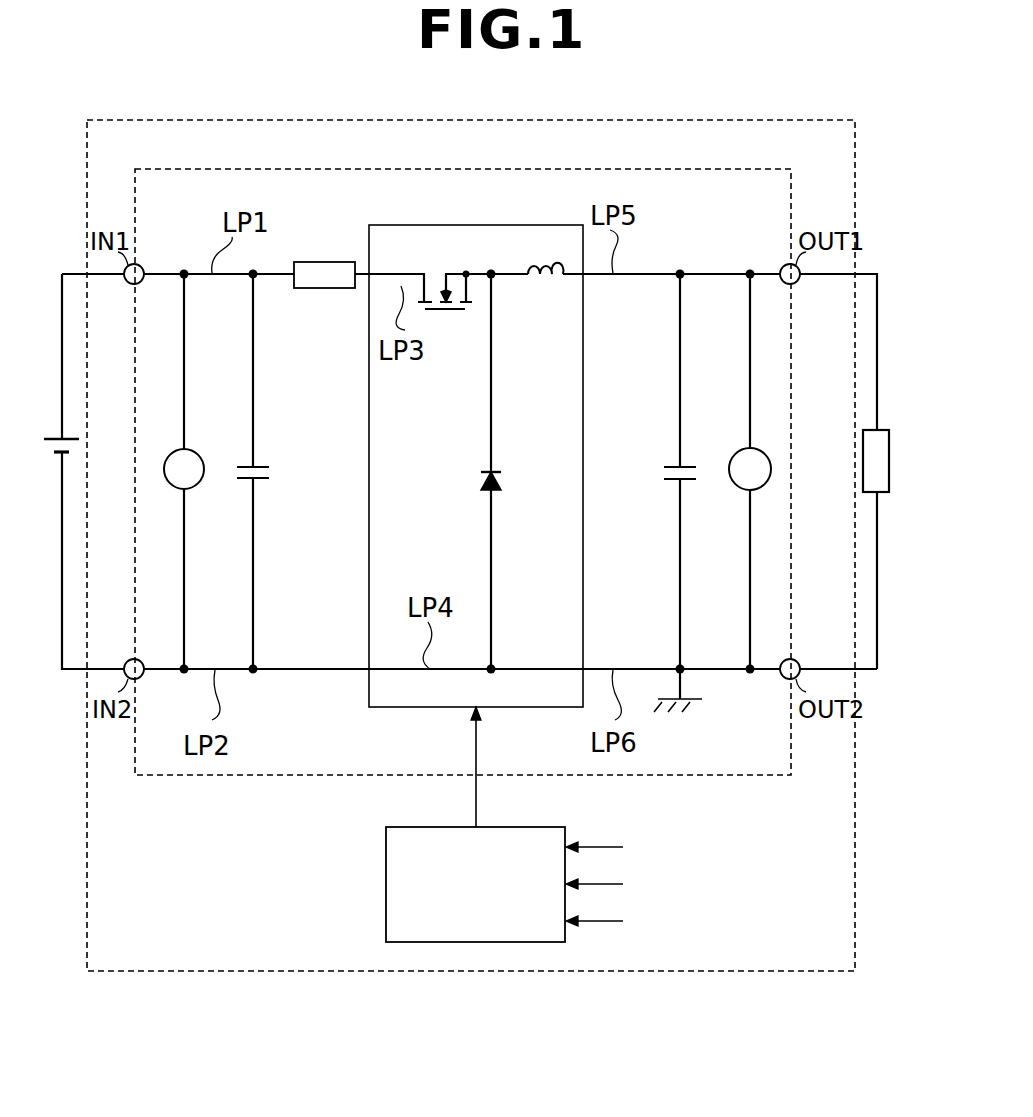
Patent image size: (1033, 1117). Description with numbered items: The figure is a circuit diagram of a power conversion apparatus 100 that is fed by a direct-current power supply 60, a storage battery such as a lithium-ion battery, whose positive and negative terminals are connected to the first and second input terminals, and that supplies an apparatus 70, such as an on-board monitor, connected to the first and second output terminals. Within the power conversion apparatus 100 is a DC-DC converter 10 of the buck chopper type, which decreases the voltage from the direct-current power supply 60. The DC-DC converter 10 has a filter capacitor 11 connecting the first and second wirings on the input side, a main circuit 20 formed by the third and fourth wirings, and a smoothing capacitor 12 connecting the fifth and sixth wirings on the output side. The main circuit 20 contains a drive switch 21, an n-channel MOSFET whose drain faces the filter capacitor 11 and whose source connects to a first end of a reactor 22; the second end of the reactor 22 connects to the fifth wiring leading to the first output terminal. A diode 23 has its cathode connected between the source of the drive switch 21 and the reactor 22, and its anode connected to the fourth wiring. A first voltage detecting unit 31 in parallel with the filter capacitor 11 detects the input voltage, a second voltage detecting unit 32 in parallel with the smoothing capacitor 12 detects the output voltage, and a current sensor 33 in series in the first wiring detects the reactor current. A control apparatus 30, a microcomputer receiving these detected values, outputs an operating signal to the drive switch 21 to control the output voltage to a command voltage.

The power conversion apparatus 100 is at (552, 120).
The DC-DC converter 10 is at (552, 169).
The main circuit 20 is at (477, 225).
The drive switch 21 is at (450, 309).
The reactor 22 is at (546, 282).
The diode 23 is at (501, 481).
The filter capacitor 11 is at (244, 465).
The smoothing capacitor 12 is at (690, 465).
The first voltage detecting unit 31 is at (164, 460).
The second voltage detecting unit 32 is at (767, 460).
The current sensor 33 is at (312, 262).
The control apparatus 30 is at (508, 827).
The direct-current power supply 60 is at (54, 439).
The apparatus 70 is at (889, 441).